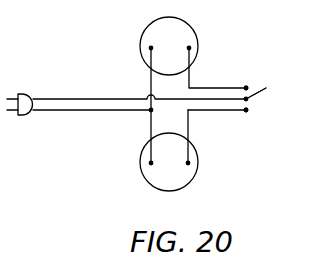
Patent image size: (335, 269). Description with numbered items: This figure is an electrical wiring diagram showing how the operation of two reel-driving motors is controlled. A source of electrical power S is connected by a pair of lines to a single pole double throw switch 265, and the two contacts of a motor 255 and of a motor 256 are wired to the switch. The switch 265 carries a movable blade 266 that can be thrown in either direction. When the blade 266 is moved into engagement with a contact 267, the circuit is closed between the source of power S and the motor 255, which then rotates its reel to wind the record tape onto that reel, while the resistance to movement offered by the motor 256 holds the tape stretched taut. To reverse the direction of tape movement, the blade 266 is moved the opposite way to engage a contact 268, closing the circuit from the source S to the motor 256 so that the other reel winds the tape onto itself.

The source of electrical power S is at (22, 95).
The motor 255 is at (158, 178).
The motor 256 is at (182, 33).
The single pole double throw switch 265 is at (281, 83).
The blade 266 is at (259, 91).
The contact 267 is at (248, 112).
The contact 268 is at (247, 84).